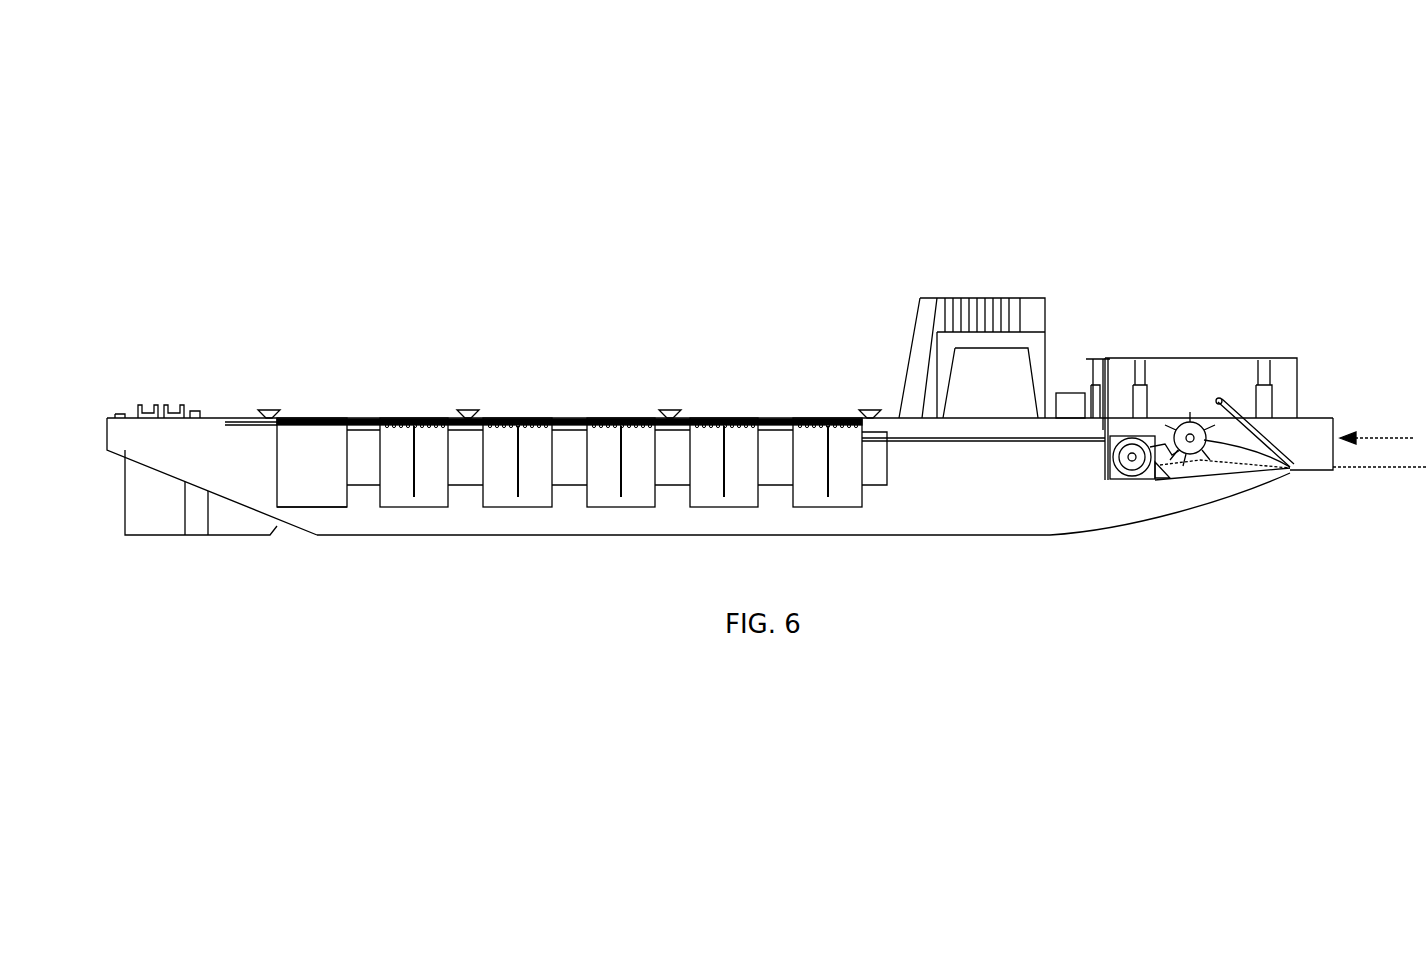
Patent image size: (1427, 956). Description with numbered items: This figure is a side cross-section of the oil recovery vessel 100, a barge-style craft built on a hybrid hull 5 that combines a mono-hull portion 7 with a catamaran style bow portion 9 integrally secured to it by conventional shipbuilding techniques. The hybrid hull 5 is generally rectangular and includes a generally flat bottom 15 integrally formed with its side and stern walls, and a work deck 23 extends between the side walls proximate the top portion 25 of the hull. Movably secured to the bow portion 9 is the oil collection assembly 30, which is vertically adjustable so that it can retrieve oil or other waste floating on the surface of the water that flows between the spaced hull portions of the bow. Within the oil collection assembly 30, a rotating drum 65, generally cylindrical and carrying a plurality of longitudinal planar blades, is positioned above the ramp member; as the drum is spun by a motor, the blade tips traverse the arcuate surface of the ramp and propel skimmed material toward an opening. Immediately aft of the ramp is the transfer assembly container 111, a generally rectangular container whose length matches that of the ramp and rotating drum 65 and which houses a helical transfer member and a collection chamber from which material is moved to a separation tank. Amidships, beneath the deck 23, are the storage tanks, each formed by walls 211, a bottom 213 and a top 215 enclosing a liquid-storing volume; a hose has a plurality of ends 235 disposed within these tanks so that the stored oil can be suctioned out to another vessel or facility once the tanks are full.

The oil recovery vessel 100 is at (1167, 178).
The hybrid hull 5 is at (444, 553).
The mono-hull portion 7 is at (584, 545).
The catamaran style bow portion 9 is at (1183, 537).
The flat bottom 15 is at (676, 535).
The work deck 23 is at (222, 418).
The top portion 25 is at (213, 425).
The oil collection assembly 30 is at (1355, 418).
The rotating drum 65 is at (1277, 440).
The transfer assembly container 111 is at (1106, 480).
The walls 211 is at (270, 480).
The bottom 213 is at (315, 507).
The top 215 is at (373, 418).
The ends 235 is at (622, 445).